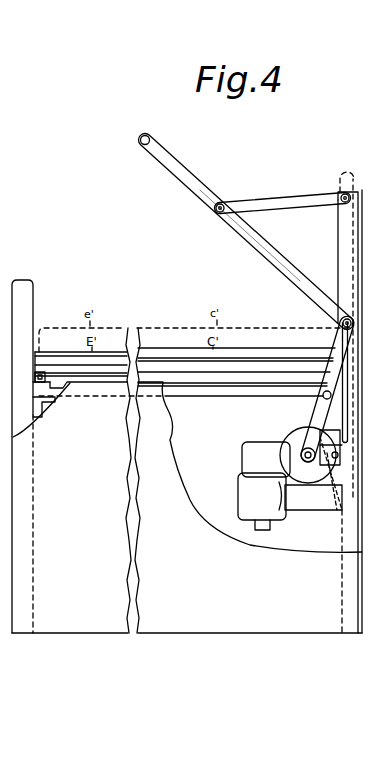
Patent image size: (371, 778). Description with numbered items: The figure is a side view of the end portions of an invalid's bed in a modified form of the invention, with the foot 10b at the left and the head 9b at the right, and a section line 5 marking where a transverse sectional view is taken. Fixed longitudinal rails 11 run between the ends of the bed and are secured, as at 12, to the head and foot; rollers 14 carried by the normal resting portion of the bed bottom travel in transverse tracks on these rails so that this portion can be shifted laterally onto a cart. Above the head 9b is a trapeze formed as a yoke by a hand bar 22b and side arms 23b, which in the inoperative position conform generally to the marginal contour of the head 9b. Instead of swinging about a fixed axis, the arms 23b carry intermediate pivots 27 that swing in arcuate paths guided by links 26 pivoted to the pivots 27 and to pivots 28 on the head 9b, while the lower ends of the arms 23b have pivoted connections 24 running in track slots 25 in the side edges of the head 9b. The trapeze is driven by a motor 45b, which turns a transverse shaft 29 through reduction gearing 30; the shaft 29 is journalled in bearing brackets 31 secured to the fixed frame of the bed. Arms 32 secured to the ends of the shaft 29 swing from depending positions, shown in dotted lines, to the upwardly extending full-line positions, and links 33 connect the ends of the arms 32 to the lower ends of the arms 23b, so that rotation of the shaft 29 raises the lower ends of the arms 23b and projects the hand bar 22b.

The section line 5- 5 is at (113, 387).
The head 9b is at (353, 258).
The front post 10b is at (33, 292).
The fixed longitudinal rail 11 is at (60, 394).
The rail securement 12 is at (42, 401).
The roller 14 is at (40, 374).
The hand bar 22b is at (138, 142).
The side arm 23b is at (273, 266).
The pivoted connection 24 is at (342, 321).
The track slot 25 is at (309, 447).
The link 26 is at (279, 197).
The intermediate pivot 27 is at (216, 210).
The pivot 28 is at (340, 204).
The transverse shaft 29 is at (292, 432).
The reduction gearing 30 is at (284, 434).
The bearing bracket 31 is at (312, 488).
The arm 32 is at (321, 396).
The link 33 is at (337, 343).
The motor 45b is at (241, 487).